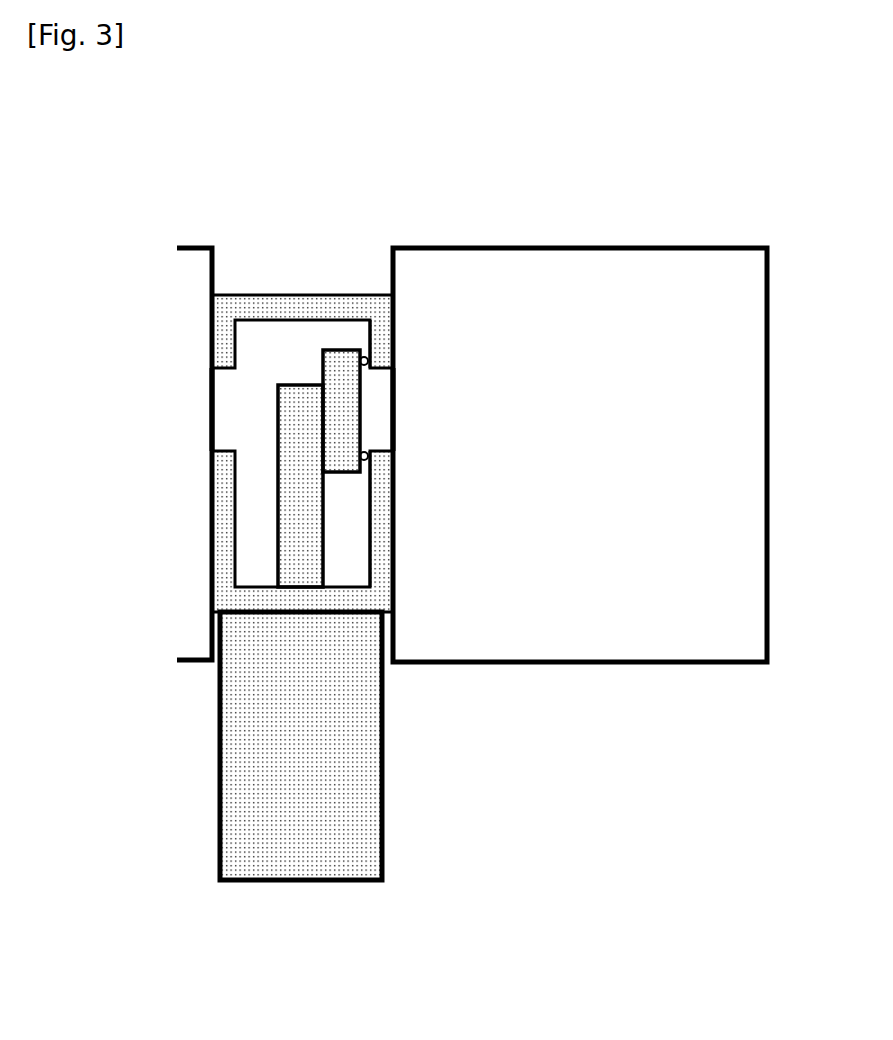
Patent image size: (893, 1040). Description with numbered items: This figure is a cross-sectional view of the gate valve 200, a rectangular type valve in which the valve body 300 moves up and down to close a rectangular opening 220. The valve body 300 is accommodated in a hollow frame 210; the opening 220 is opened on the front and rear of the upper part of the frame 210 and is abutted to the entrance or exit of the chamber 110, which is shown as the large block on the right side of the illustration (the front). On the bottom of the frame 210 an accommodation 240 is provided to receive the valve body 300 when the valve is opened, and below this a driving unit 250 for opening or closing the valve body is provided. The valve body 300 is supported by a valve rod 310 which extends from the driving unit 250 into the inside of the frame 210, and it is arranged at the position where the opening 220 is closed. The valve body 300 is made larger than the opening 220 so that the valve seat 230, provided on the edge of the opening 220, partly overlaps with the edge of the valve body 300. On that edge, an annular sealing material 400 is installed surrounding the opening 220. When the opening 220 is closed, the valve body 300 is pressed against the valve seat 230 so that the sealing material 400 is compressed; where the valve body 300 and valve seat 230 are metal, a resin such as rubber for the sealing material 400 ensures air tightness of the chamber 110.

The chamber 110 is at (190, 650).
The gate valve 200 is at (712, 156).
The frame 210 is at (272, 295).
The opening 220 is at (382, 407).
The valve seat 230 is at (372, 362).
The accommodation 240 is at (262, 538).
The driving unit 250 is at (370, 788).
The valve body 300 is at (340, 360).
The valve rod 310 is at (292, 418).
The sealing material 400 is at (367, 358).